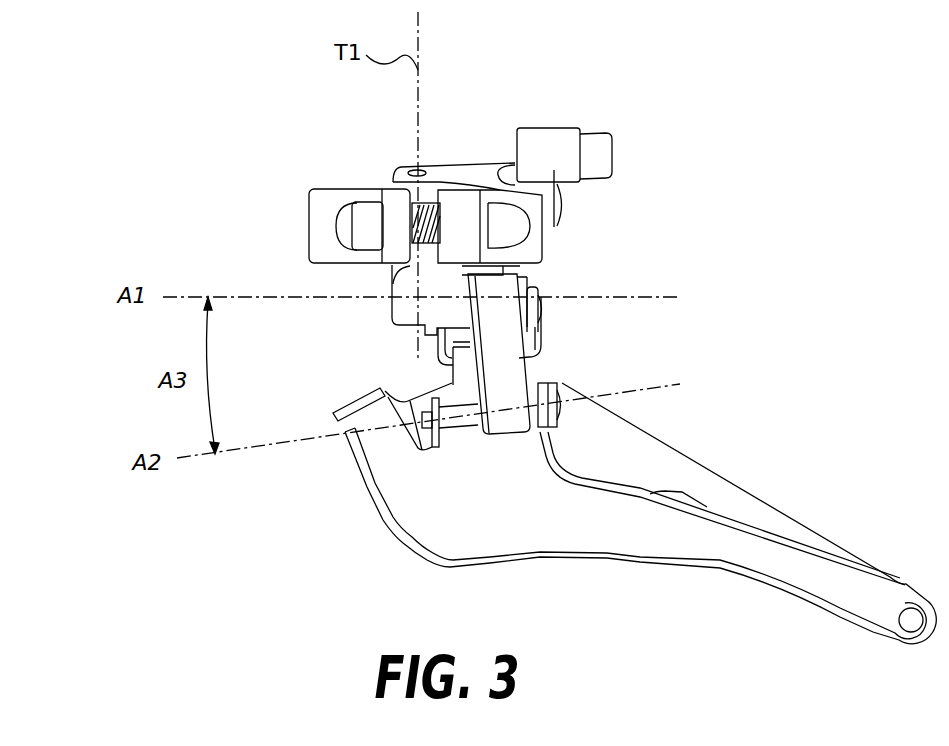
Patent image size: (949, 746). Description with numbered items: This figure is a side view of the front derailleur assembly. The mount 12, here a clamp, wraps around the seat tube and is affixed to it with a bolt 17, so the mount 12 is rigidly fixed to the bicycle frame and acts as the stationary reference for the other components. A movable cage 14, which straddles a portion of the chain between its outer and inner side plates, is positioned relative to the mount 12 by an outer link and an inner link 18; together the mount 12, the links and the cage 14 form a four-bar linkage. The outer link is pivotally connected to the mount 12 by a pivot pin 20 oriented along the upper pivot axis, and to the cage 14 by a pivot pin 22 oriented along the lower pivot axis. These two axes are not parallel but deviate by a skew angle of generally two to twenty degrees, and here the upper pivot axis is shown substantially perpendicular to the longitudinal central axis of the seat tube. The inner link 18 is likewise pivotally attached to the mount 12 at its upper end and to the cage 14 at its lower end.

The mount 12 is at (307, 223).
The cage 14 is at (645, 530).
The bolt 17 is at (368, 222).
The inner link 18 is at (505, 358).
The pivot pin 20 is at (541, 297).
The pivot pin 22 is at (562, 386).